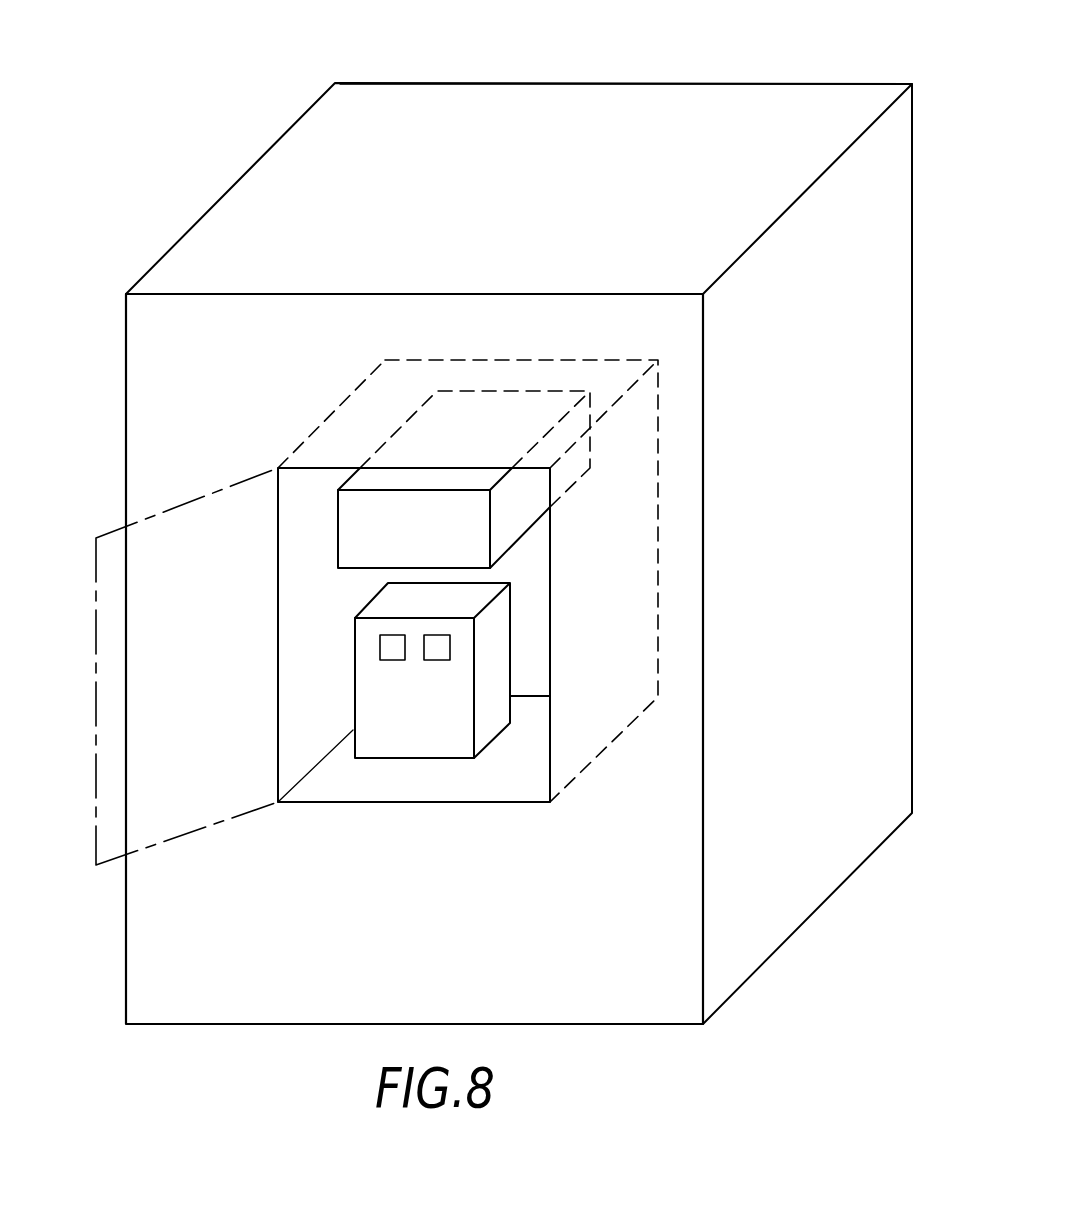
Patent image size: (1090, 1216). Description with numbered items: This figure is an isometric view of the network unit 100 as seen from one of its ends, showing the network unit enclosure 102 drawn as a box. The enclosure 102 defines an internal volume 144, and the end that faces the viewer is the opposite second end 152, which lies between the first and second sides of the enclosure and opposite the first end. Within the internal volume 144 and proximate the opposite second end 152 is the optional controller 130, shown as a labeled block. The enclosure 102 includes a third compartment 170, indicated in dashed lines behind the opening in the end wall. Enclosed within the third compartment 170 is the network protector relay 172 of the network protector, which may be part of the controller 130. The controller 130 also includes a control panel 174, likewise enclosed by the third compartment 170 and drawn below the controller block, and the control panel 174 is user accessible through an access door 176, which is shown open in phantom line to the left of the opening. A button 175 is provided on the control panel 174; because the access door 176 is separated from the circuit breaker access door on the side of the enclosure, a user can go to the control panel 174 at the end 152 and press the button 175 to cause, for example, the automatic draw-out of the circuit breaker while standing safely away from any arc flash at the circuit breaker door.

The apparatus 100 is at (210, 155).
The network unit enclosure 102 is at (660, 82).
The controller 130 is at (338, 507).
The internal volume 144 is at (653, 852).
The opposite second end 152 is at (652, 988).
The third compartment 170 is at (658, 517).
The network protector relay 172 is at (352, 553).
The control panel 174 is at (500, 643).
The button 175 is at (388, 646).
The access door 176 is at (107, 532).